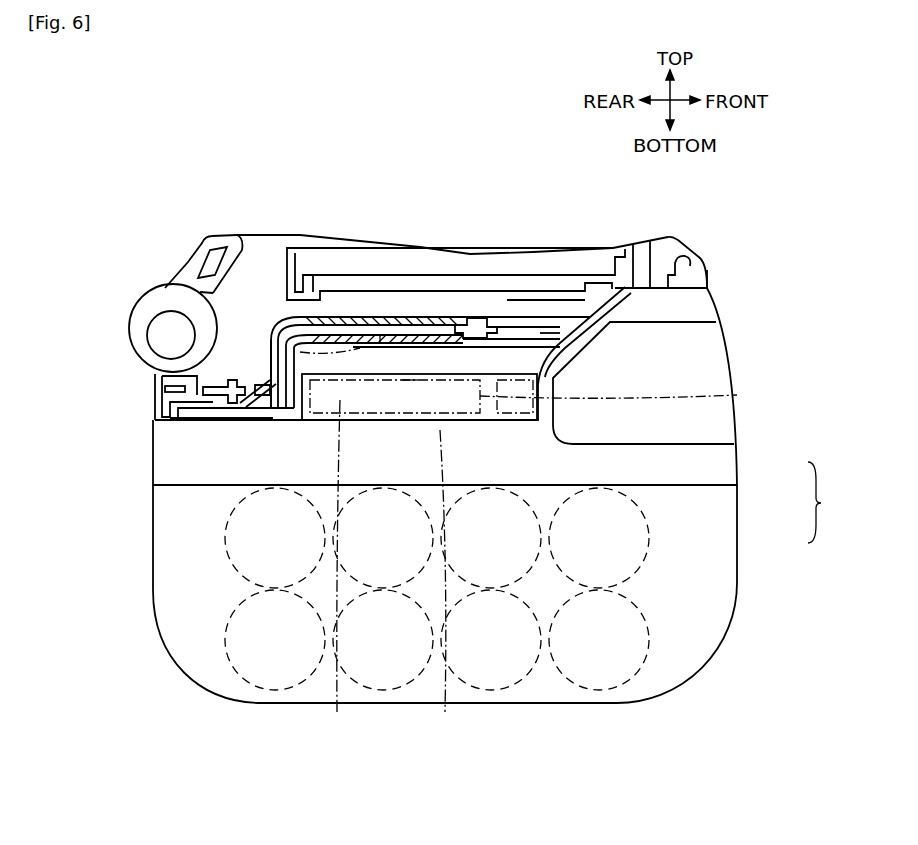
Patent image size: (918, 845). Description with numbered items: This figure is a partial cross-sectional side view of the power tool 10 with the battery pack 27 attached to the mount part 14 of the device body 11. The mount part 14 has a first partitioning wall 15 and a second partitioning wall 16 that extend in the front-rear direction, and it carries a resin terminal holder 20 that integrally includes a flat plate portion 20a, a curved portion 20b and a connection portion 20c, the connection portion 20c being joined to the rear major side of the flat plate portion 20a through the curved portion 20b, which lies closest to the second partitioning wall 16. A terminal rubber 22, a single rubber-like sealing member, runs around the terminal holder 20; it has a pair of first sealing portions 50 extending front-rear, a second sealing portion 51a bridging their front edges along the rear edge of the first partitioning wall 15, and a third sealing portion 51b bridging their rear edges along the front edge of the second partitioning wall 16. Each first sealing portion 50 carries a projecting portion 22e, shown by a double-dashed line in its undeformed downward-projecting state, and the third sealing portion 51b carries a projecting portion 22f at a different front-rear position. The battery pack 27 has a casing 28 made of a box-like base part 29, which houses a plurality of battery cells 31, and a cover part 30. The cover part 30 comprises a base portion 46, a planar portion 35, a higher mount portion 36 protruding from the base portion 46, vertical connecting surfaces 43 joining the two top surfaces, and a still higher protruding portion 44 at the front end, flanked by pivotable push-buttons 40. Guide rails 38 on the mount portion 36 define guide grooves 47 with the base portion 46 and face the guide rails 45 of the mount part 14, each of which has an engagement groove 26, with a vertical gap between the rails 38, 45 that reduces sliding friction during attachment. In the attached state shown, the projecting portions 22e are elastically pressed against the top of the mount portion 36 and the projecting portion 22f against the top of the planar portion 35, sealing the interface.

The power tool 10 is at (196, 213).
The device body 11 is at (191, 252).
The mount part 14 is at (690, 254).
The first partitioning wall 15 is at (557, 342).
The second partitioning wall 16 is at (205, 421).
The terminal holder 20 is at (433, 319).
The flat plate portion 20a is at (370, 333).
The curved portion 20b is at (285, 350).
The connection portion 20c is at (270, 405).
The terminal rubber 22 is at (265, 333).
The projecting portion 22e is at (343, 330).
The projecting portion 22f is at (257, 398).
The engagement groove 26 is at (737, 396).
The battery pack 27 is at (743, 276).
The casing 28 is at (827, 502).
The base part 29 is at (737, 545).
The cover part 30 is at (737, 464).
The battery cells 31 is at (617, 712).
The planar portion 35 is at (168, 395).
The mount portion 36 is at (543, 332).
The guide rails 38 is at (507, 358).
The push-buttons 40 is at (703, 345).
The connecting surfaces 43 is at (236, 380).
The protruding portion 44 is at (643, 262).
The guide rails 45 is at (336, 566).
The base portion 46 is at (444, 581).
The guide grooves 47 is at (408, 393).
The first sealing portions 50 is at (381, 355).
The second sealing portion 51a is at (469, 330).
The third sealing portion 51b is at (262, 382).